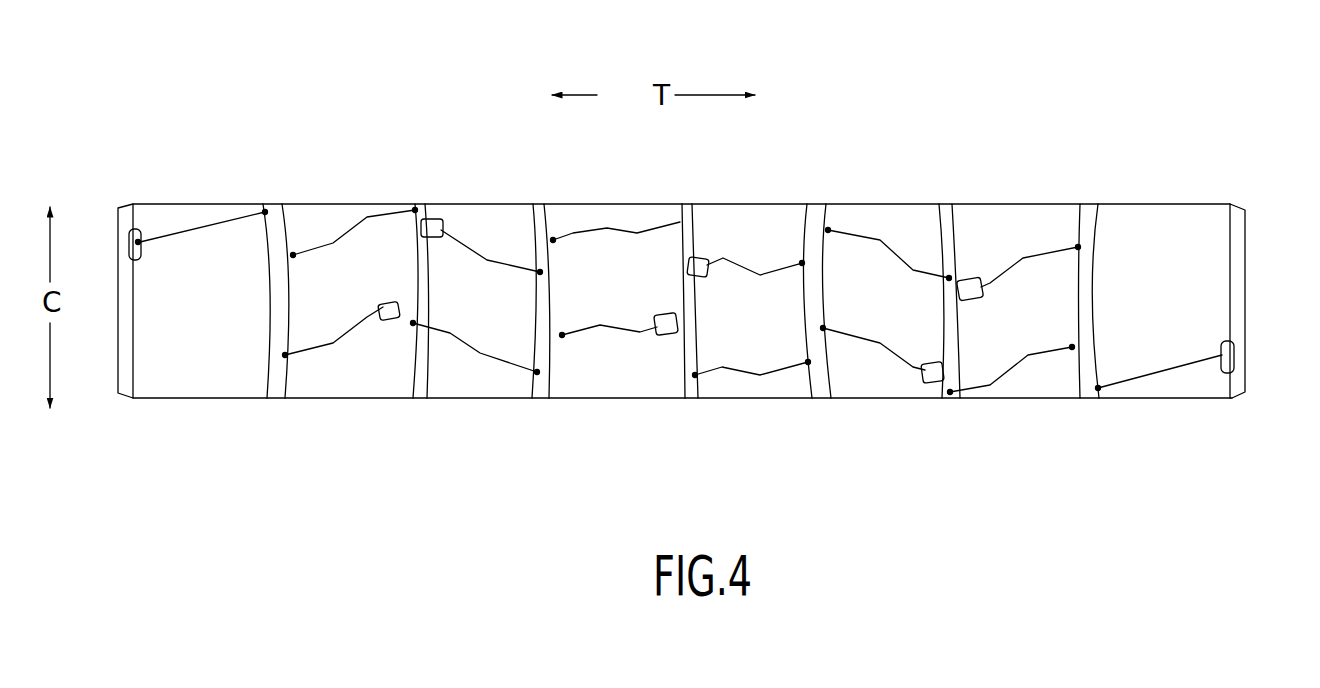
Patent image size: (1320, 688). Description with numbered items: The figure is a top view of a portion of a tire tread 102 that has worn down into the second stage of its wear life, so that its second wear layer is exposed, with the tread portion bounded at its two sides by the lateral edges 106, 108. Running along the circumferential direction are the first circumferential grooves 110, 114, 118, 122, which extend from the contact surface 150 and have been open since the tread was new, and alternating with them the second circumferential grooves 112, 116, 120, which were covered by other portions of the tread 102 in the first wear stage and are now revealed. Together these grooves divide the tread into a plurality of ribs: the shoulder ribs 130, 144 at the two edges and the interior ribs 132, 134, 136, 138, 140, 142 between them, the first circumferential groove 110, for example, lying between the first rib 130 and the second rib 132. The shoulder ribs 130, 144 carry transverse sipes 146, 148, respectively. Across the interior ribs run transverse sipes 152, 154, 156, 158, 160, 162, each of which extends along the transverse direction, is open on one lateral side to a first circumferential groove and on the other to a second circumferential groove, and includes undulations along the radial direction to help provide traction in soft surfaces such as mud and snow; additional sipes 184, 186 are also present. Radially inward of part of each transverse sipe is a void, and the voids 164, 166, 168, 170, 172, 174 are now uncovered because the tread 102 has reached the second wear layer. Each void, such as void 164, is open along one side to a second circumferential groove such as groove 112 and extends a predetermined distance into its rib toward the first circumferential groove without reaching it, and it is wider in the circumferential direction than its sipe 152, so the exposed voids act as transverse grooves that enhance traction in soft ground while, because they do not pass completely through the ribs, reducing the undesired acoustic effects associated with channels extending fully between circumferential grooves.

The tread 102 is at (193, 138).
The first end 106 is at (118, 410).
The second end 108 is at (1245, 200).
The first circumferential groove 110 is at (275, 403).
The second circumferential groove 112 is at (418, 403).
The first circumferential groove 114 is at (542, 403).
The second circumferential groove 116 is at (690, 403).
The first circumferential groove 118 is at (820, 403).
The second circumferential groove 120 is at (947, 403).
The first circumferential groove 122 is at (1090, 403).
The shoulder rib 130 is at (203, 383).
The interior rib 132 is at (317, 214).
The interior rib 134 is at (468, 208).
The interior rib 136 is at (613, 210).
The interior rib 138 is at (753, 215).
The interior rib 140 is at (883, 217).
The interior rib 142 is at (1003, 215).
The shoulder rib 144 is at (1162, 215).
The transverse sipe 146 is at (177, 217).
The transverse sipe 148 is at (1163, 385).
The contact surface 150 is at (177, 382).
The transverse sipe 152 is at (313, 343).
The transverse sipe 154 is at (487, 268).
The transverse sipe 156 is at (588, 321).
The transverse sipe 158 is at (740, 270).
The transverse sipe 160 is at (852, 331).
The transverse sipe 162 is at (1032, 260).
The void 164 is at (390, 325).
The void 166 is at (432, 216).
The void 168 is at (663, 338).
The void 170 is at (702, 255).
The void 172 is at (930, 376).
The void 174 is at (968, 277).
The sipe 184 is at (350, 217).
The sipe 186 is at (490, 370).